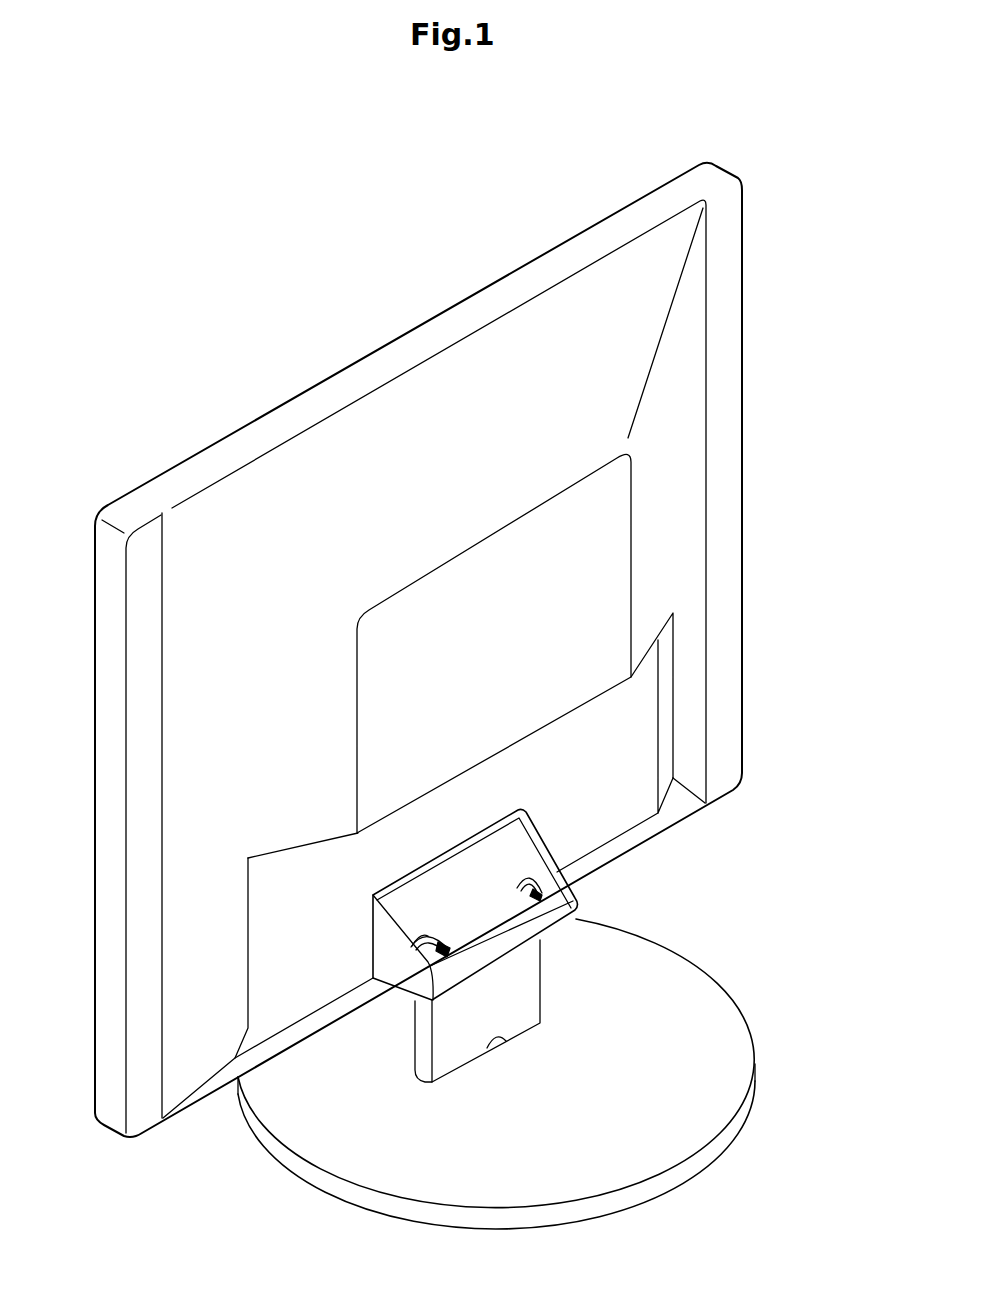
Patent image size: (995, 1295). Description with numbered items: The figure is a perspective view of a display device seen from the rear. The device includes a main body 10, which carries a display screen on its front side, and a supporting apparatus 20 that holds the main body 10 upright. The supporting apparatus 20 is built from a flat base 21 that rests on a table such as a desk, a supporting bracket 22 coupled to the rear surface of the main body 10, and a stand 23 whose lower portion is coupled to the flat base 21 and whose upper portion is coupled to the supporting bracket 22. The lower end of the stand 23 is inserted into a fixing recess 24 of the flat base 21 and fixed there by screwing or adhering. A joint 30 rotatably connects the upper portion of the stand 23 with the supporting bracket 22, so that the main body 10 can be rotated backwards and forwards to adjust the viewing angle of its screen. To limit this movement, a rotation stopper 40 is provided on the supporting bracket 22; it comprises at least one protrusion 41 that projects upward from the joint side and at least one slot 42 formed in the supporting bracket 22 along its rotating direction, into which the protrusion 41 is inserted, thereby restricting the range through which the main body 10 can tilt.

The main body 10 is at (682, 498).
The supporting apparatus 20 is at (543, 995).
The flat base 21 is at (703, 1025).
The supporting bracket 22 is at (470, 896).
The stand 23 is at (512, 1011).
The fixing recess 24 is at (500, 1038).
The joint 30 is at (408, 1007).
The rotation stopper 40 is at (429, 932).
The protrusion 41 is at (411, 934).
The slot 42 is at (470, 947).